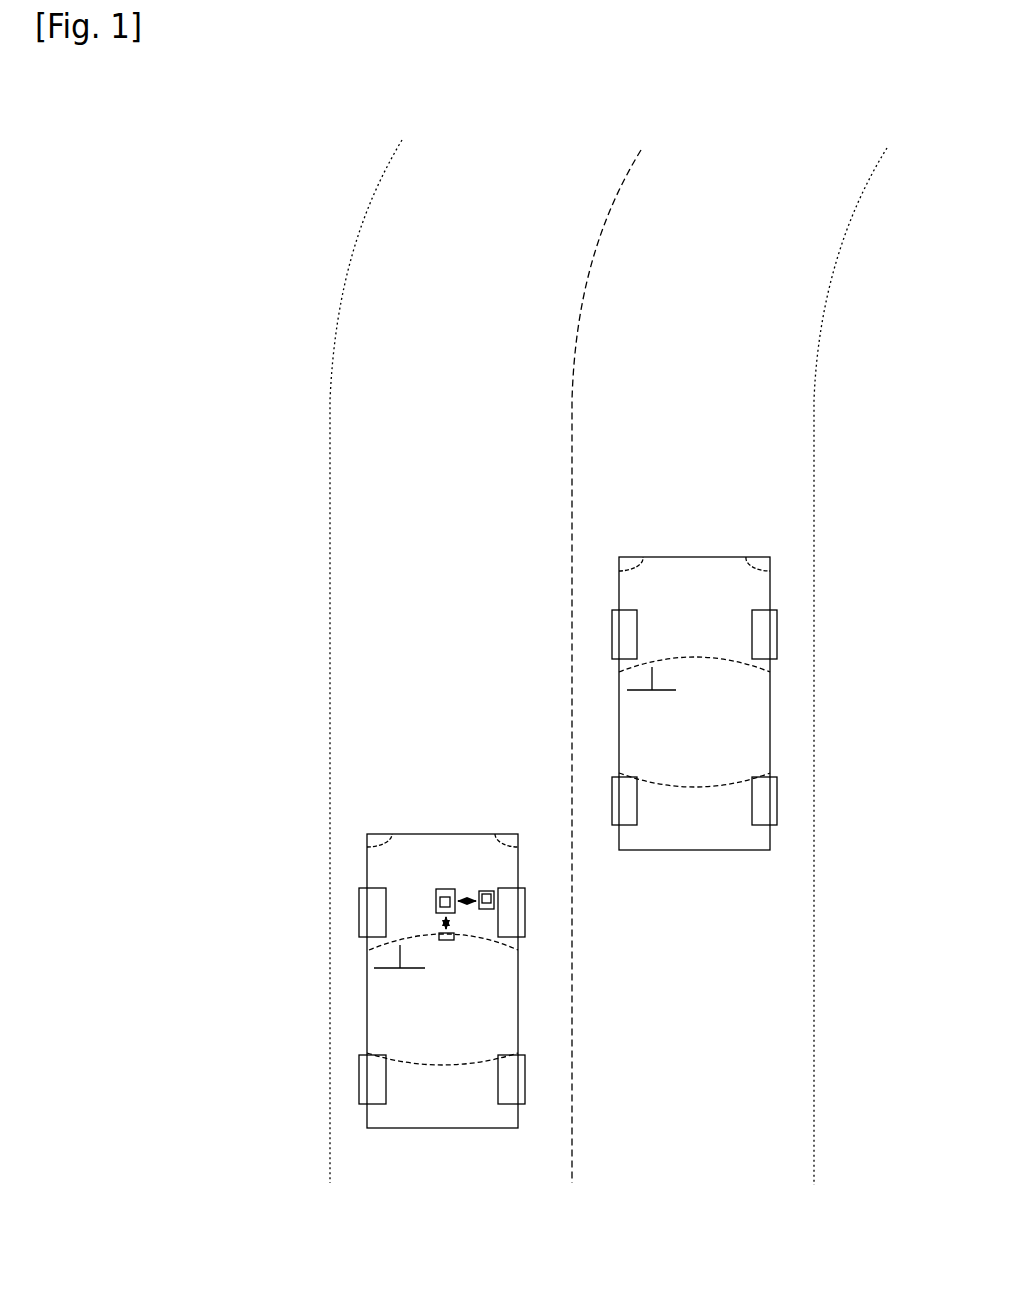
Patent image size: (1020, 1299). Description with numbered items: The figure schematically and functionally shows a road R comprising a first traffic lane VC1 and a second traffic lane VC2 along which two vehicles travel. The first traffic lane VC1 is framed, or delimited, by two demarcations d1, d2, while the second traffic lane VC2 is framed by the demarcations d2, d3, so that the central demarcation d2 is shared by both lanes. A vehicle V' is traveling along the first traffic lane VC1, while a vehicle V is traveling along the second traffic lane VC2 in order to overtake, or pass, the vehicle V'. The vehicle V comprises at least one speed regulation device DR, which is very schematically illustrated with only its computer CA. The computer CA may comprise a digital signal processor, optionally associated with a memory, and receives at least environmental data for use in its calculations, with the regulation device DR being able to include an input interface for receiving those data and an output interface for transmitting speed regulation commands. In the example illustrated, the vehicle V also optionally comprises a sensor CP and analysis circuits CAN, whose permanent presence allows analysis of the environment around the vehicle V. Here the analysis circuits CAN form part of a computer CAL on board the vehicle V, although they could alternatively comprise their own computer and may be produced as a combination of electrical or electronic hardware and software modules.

The road R is at (577, 662).
The demarcation d1 is at (815, 727).
The demarcation d2 is at (571, 735).
The demarcation d3 is at (327, 735).
The first traffic lane VC1 is at (706, 500).
The second traffic lane VC2 is at (470, 500).
The vehicle V is at (444, 1002).
The vehicle V' is at (694, 726).
The analysis circuits CAN is at (436, 897).
The computer CA is at (494, 906).
The speed regulation device DR is at (487, 891).
The computer CAL is at (436, 905).
The sensor CP is at (446, 942).